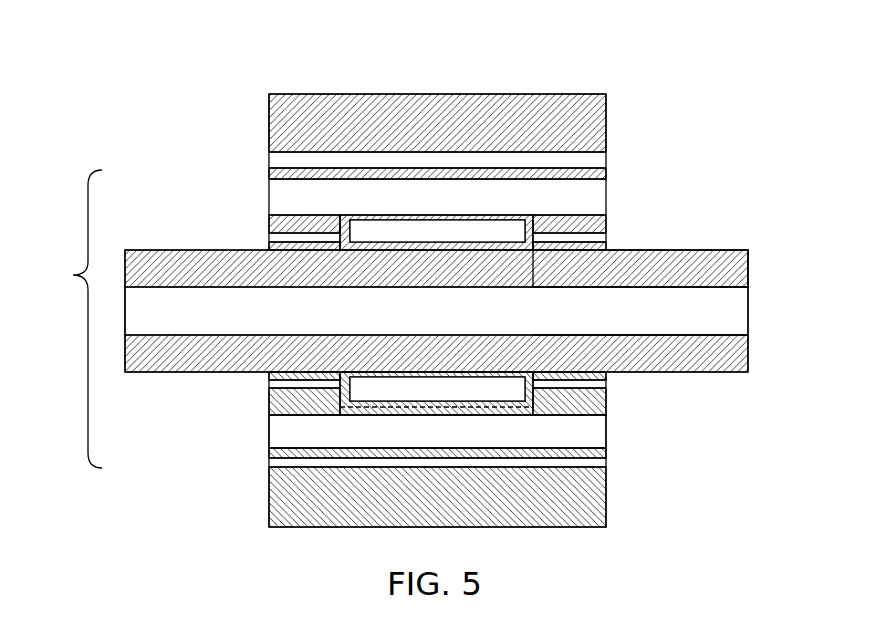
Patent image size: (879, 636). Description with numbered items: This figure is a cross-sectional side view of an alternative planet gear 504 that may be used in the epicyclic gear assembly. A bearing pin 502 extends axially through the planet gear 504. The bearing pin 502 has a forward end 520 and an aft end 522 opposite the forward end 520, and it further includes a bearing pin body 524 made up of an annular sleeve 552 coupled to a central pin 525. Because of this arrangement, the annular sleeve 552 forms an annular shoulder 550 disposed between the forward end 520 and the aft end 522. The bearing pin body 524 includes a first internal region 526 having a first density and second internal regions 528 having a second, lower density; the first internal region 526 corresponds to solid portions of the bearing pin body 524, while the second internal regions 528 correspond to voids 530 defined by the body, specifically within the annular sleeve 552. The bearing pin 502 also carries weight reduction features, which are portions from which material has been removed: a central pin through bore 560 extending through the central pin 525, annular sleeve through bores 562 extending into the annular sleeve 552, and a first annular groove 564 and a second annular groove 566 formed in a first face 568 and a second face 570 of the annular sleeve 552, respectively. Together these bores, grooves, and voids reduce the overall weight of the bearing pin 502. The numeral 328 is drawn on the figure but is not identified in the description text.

The bearing pin 502 is at (73, 275).
The planet gear 504 is at (274, 67).
The forward end 520 is at (145, 262).
The aft end 522 is at (738, 310).
The bearing pin body 524 is at (597, 258).
The central pin 525 is at (260, 262).
The first internal region 526 is at (700, 262).
The upper coil housing 328 is at (535, 220).
The second internal region 528 is at (535, 400).
The voids 530 is at (465, 233).
The annular shoulder 550 is at (268, 218).
The annular sleeve 552 is at (268, 423).
The central pin through bore 560 is at (630, 317).
The annular sleeve through bores 562 is at (410, 190).
The first annular groove 564 is at (268, 393).
The second annular groove 566 is at (605, 390).
The first face 568 is at (268, 407).
The second face 570 is at (607, 407).